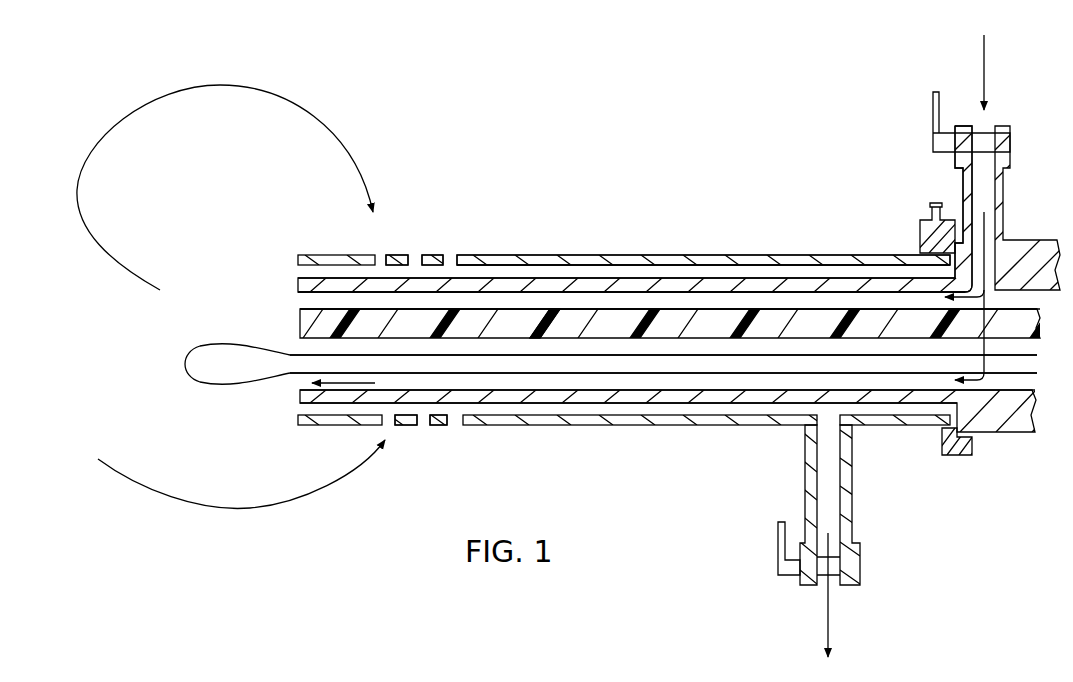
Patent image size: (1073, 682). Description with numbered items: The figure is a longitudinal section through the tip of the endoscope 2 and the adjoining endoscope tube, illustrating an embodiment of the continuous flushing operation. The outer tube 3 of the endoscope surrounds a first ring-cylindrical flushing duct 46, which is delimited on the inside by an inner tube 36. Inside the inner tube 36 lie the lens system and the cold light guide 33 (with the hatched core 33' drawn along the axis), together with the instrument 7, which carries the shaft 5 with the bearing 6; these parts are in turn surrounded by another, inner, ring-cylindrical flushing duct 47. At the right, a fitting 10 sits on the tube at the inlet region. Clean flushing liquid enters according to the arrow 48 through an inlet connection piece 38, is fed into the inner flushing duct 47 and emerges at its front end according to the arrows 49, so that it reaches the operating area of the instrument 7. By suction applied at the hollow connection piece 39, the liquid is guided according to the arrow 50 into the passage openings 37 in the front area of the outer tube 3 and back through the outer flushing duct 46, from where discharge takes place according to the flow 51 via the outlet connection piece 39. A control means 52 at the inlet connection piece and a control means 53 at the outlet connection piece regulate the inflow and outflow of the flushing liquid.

The tip of the endoscope 2 is at (297, 252).
The outer tube 3 is at (612, 256).
The shaft 5 is at (651, 365).
The bearing 6 is at (651, 365).
The instrument 7 is at (180, 364).
The fitting block 10 is at (920, 232).
The cold light guide 33 is at (531, 279).
The heating core 33' is at (649, 325).
The inner tube 36 is at (298, 285).
The passage openings 37 is at (445, 252).
The inlet connection piece 38 is at (963, 185).
The outlet connection piece 39 is at (805, 462).
The first ring-cylindrical flushing duct 46 is at (706, 271).
The inner ring-cylindrical flushing duct 47 is at (761, 301).
The arrow indicating inflow of clean flushing liquid 48 is at (986, 80).
The arrows indicating emergence of flushing liquid 49 is at (300, 303).
The arrow indicating suction return flow 50 is at (216, 85).
The discharge of flushing liquid 51 is at (829, 610).
The control means 52 is at (933, 108).
The control means 53 is at (778, 553).